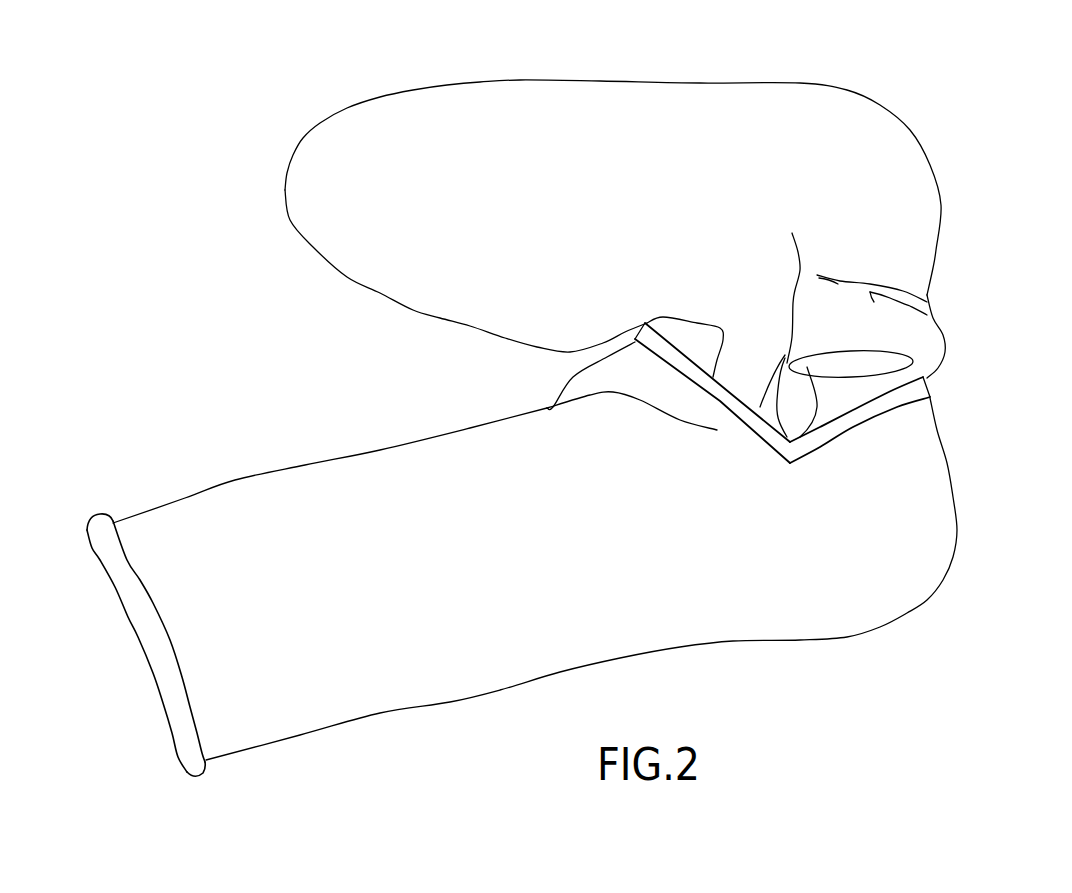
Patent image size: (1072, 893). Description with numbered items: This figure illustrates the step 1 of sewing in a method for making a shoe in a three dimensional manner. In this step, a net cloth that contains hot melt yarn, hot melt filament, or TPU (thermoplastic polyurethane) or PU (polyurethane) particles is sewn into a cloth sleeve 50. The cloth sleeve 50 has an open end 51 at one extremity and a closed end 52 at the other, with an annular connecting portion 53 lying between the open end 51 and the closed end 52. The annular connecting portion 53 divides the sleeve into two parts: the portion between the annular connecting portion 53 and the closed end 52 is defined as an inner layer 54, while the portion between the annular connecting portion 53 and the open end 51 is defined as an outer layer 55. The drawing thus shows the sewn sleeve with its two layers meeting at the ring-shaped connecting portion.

The step of sewing 1 is at (963, 125).
The cloth sleeve 50 is at (957, 337).
The open end 51 is at (138, 637).
The closed end 52 is at (297, 167).
The annular connecting portion 53 is at (922, 392).
The inner layer 54 is at (707, 112).
The outer layer 55 is at (807, 617).